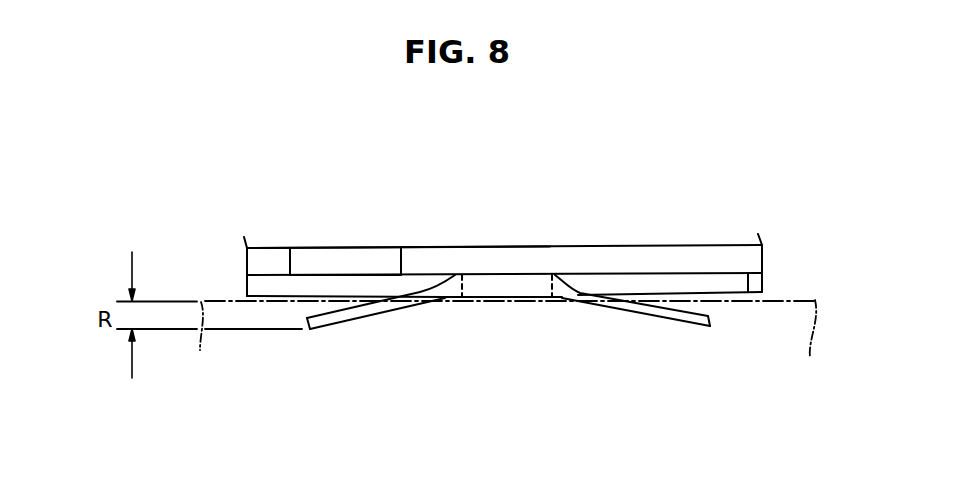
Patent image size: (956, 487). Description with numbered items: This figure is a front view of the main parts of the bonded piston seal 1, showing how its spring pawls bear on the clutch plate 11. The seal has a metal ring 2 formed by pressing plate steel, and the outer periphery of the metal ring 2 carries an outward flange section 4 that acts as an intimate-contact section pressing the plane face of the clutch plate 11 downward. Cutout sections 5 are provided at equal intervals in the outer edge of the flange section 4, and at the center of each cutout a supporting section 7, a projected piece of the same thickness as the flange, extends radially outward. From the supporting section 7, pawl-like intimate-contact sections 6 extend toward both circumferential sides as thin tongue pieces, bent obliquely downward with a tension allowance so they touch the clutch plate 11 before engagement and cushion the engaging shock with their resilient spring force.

The bonded piston seal 1 is at (656, 225).
The metal ring 2 is at (550, 258).
The outward flange section 4 is at (399, 277).
The cutout sections 5 is at (343, 283).
The pawl-like intimate-contact sections 6 is at (355, 316).
The supporting section 7 is at (510, 297).
The clutch plate 11 is at (783, 318).